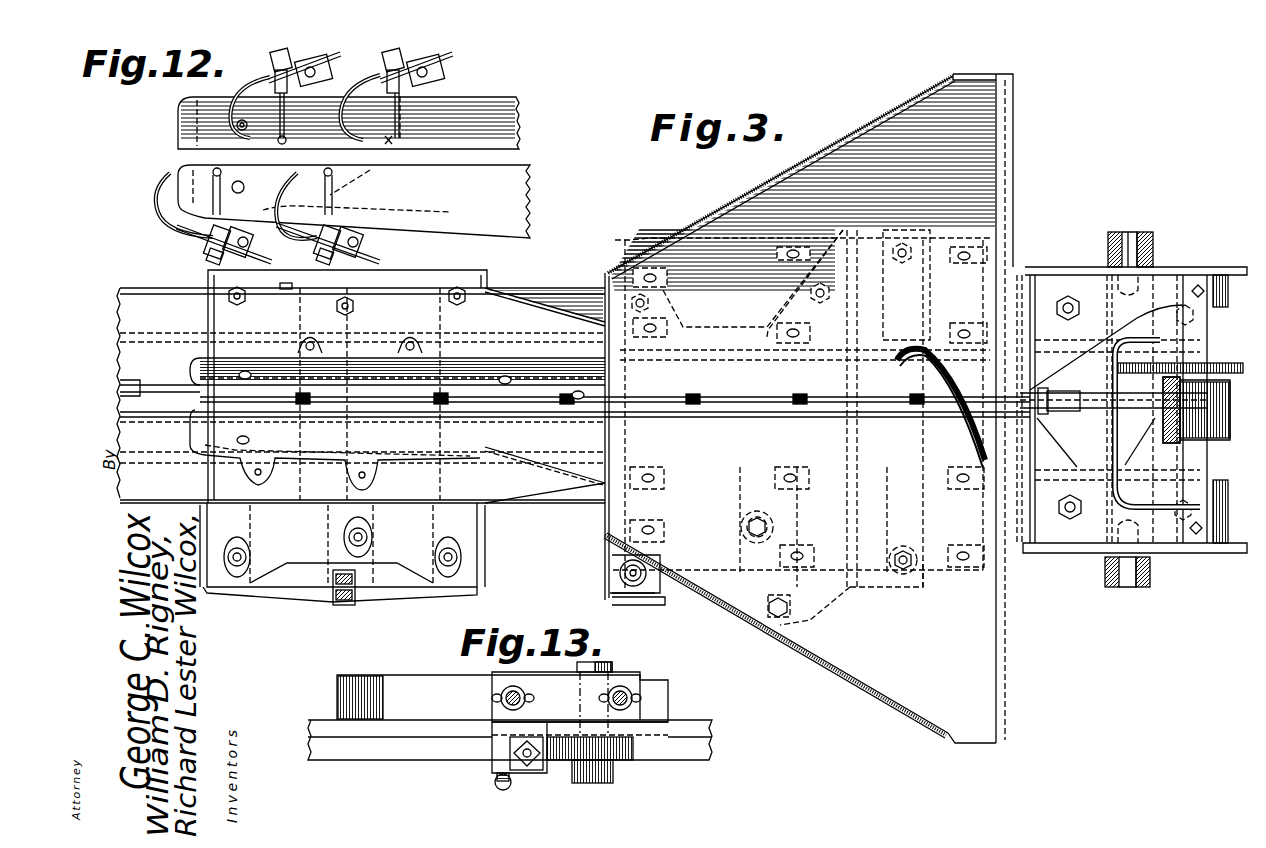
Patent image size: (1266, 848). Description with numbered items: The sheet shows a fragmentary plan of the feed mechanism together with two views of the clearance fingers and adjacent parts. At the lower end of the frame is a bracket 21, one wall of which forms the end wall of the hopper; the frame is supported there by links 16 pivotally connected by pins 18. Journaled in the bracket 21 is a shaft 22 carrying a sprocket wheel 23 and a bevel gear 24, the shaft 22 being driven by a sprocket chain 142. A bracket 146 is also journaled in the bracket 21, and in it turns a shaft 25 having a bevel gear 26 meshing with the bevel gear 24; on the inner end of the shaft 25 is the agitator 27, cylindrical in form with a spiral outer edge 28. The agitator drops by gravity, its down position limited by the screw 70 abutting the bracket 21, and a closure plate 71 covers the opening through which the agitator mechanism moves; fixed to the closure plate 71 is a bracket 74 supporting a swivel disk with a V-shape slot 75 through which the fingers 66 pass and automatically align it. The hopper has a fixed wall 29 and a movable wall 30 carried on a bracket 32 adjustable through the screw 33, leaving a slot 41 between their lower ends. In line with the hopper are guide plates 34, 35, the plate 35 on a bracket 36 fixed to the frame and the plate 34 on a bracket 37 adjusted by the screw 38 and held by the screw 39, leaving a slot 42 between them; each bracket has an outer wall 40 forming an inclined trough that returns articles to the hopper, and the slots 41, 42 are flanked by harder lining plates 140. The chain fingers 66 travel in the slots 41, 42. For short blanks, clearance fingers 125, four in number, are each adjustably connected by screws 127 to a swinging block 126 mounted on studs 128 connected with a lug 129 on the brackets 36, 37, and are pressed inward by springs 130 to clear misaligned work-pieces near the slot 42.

In FIG. 3, the links 16 is at (1108, 238).
In FIG. 3, the pins 18 is at (1130, 235).
In FIG. 3, the bracket 21 is at (1008, 636).
In FIG. 3, the shaft 22 is at (1147, 425).
In FIG. 3, the sprocket wheel 23 is at (1230, 374).
In FIG. 3, the bevel gear 24 is at (1215, 435).
In FIG. 12, the shaft 25 is at (168, 176).
In FIG. 3, the bevel gear 26 is at (1112, 380).
In FIG. 3, the agitator 27 is at (927, 343).
In FIG. 3, the spiral outer edge 28 is at (943, 403).
In FIG. 3, the fixed hopper wall 29 is at (812, 172).
In FIG. 3, the movable hopper wall 30 is at (895, 690).
In FIG. 3, the bracket 32 is at (663, 598).
In FIG. 3, the screw 33 is at (790, 630).
In FIG. 12, the guide plate 34 is at (528, 197).
In FIG. 3, the guide plate 34 is at (215, 448).
In FIG. 12, the guide plate 35 is at (514, 108).
In FIG. 3, the guide plate 35 is at (440, 380).
In FIG. 3, the bracket 36 is at (480, 272).
In FIG. 3, the bracket 37 is at (480, 538).
In FIG. 13, the bracket 37 is at (700, 748).
In FIG. 3, the screw 38 is at (340, 605).
In FIG. 3, the screw 39 is at (250, 550).
In FIG. 3, the wall 40 is at (450, 282).
In FIG. 3, the slot 41 is at (774, 417).
In FIG. 12, the slot 42 is at (512, 153).
In FIG. 3, the slot 42 is at (435, 414).
In FIG. 3, the fingers 66 is at (690, 396).
In FIG. 3, the screw 70 is at (1078, 404).
In FIG. 3, the closure plate 71 is at (985, 372).
In FIG. 3, the bracket 74 is at (1030, 478).
In FIG. 3, the V-shape slot 75 is at (1063, 317).
In FIG. 12, the clearance fingers 125 is at (250, 95).
In FIG. 13, the clearance fingers 125 is at (418, 685).
In FIG. 12, the swinging block 126 is at (210, 233).
In FIG. 13, the swinging block 126 is at (642, 675).
In FIG. 13, the screws 127 is at (606, 694).
In FIG. 12, the studs 128 is at (440, 70).
In FIG. 13, the studs 128 is at (602, 662).
In FIG. 12, the lug 129 is at (430, 86).
In FIG. 3, the lug 129 is at (330, 348).
In FIG. 13, the lug 129 is at (620, 765).
In FIG. 12, the springs 130 is at (355, 180).
In FIG. 13, the springs 130 is at (495, 788).
In FIG. 3, the lining plates 140 is at (175, 410).
In FIG. 3, the sprocket chain 142 is at (1113, 410).
In FIG. 3, the bracket 146 is at (1100, 487).